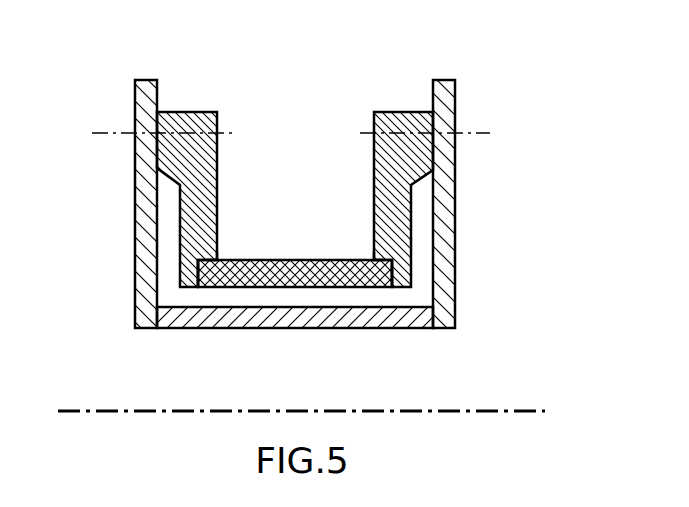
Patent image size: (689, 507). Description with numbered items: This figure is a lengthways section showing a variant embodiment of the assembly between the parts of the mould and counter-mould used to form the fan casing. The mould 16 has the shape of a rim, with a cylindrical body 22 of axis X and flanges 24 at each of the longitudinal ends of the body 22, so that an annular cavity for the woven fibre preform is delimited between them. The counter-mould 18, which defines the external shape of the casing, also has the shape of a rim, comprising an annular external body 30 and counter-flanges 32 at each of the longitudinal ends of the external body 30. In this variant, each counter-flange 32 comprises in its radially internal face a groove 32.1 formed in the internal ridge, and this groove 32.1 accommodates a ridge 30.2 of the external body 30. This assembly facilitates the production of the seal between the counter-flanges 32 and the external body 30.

The housing 16 is at (320, 236).
The counter-mould 18 is at (295, 200).
The cylindrical body 22 is at (256, 312).
The flanges 24 is at (148, 210).
The external body 30 is at (327, 277).
The ridge 30.2 is at (198, 262).
The counter-flanges 32 is at (397, 170).
The groove 32.1 is at (205, 262).